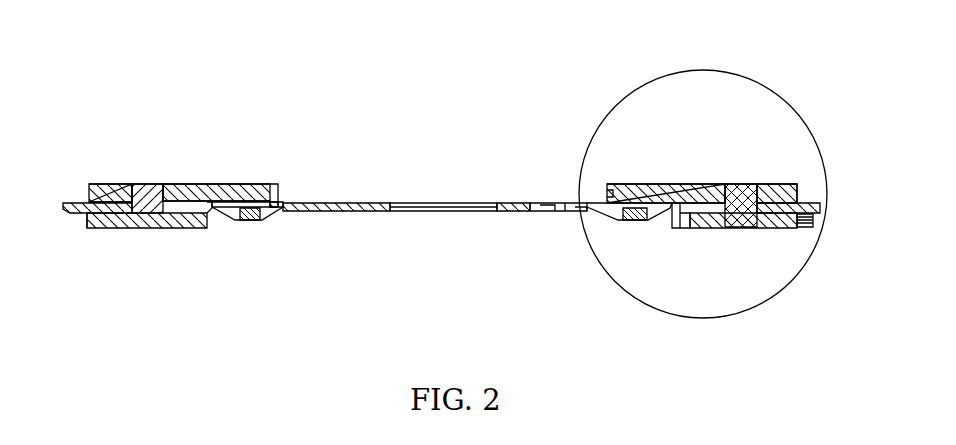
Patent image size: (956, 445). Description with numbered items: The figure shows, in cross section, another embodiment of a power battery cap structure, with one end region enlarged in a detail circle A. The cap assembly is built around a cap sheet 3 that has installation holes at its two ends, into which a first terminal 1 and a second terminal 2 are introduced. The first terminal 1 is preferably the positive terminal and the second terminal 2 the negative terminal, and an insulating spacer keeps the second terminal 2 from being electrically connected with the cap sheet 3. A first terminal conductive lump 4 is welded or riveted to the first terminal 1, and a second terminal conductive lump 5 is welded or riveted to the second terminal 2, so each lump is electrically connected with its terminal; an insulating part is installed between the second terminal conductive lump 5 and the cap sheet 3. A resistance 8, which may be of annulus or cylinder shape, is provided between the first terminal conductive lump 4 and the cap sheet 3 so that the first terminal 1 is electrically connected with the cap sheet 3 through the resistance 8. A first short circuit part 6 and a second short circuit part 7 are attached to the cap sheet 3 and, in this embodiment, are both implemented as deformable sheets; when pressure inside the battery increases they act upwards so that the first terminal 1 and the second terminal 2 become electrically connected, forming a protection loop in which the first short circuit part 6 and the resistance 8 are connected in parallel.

The first terminal 1 is at (732, 195).
The second terminal 2 is at (150, 192).
The cap sheet 3 is at (372, 203).
The first terminal conductive lump 4 is at (668, 195).
The second terminal conductive lump 5 is at (235, 190).
The first short circuit part 6 is at (630, 220).
The second short circuit part 7 is at (250, 212).
The resistance 8 is at (750, 212).
The detail region A is at (760, 88).